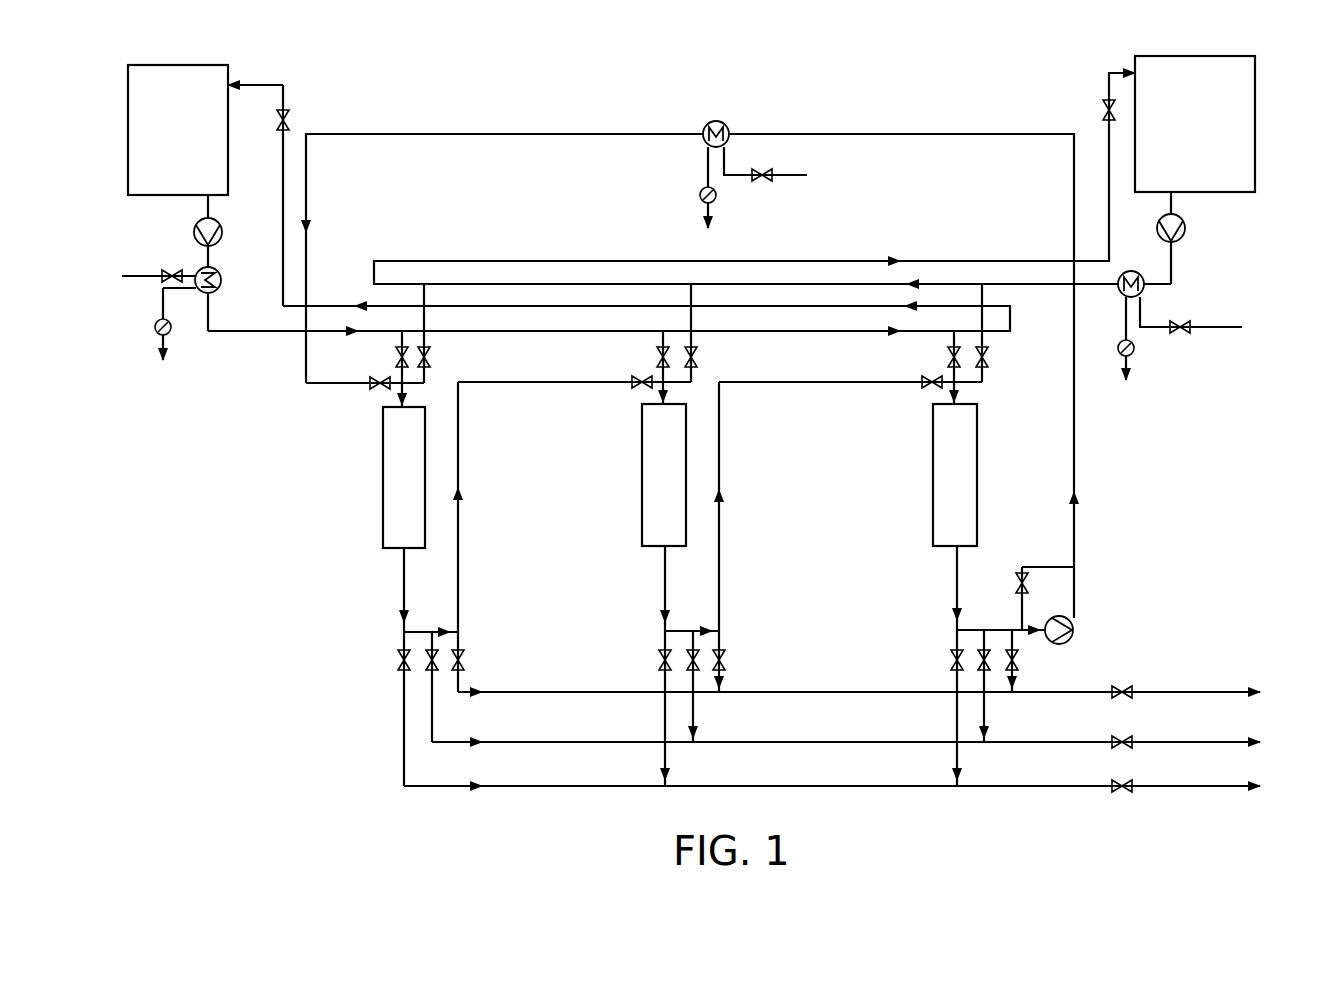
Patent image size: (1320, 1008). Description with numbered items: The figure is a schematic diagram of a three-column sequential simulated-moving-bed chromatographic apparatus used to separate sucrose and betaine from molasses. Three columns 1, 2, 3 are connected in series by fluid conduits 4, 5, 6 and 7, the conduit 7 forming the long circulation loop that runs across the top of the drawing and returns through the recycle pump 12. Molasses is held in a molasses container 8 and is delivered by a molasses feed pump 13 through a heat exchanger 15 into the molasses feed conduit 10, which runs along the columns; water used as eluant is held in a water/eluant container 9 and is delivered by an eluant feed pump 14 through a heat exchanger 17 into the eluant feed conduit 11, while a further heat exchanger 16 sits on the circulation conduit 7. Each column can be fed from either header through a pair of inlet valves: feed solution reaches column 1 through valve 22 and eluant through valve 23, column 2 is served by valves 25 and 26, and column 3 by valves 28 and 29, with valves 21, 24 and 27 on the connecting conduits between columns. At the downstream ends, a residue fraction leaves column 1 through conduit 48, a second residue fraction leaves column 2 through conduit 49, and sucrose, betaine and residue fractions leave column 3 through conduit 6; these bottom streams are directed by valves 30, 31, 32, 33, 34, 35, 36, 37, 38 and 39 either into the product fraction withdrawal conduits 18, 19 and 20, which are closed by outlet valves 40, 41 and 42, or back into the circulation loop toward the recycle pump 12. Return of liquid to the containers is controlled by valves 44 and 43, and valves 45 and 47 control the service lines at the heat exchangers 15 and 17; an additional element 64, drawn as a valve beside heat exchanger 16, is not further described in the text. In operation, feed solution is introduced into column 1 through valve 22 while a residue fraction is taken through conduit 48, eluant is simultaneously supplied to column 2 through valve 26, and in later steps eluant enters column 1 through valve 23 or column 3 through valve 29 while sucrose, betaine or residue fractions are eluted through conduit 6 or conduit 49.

The column 1 is at (383, 488).
The column 2 is at (642, 488).
The column 3 is at (933, 488).
The fluid conduit 4 is at (460, 560).
The fluid conduit 5 is at (721, 560).
The fluid conduit 6 is at (960, 565).
The fluid conduit 7 is at (425, 134).
The molasses container 8 is at (228, 170).
The water/eluant container 9 is at (1255, 192).
The molasses feed conduit 10 is at (215, 324).
The eluant feed conduit 11 is at (1182, 268).
The recycle pump 12 is at (1072, 635).
The molasses feed pump 13 is at (221, 226).
The eluant feed pump 14 is at (1185, 232).
The heat exchanger 15 is at (221, 277).
The heat exchanger 16 is at (727, 123).
The heat exchanger 17 is at (1138, 272).
The product fraction withdrawal conduit 18 is at (1066, 693).
The product fraction withdrawal conduit 19 is at (1066, 743).
The product fraction withdrawal conduit 20 is at (1066, 787).
The valve 21 is at (373, 391).
The valve 22 is at (396, 360).
The valve 23 is at (430, 363).
The valve 24 is at (637, 391).
The valve 25 is at (657, 360).
The valve 26 is at (697, 362).
The valve 27 is at (927, 391).
The valve 28 is at (948, 360).
The valve 29 is at (988, 362).
The valve 30 is at (398, 663).
The valve 31 is at (437, 670).
The valve 32 is at (464, 662).
The valve 33 is at (659, 663).
The valve 34 is at (687, 660).
The valve 35 is at (725, 662).
The valve 36 is at (951, 661).
The valve 37 is at (978, 660).
The valve 38 is at (1018, 661).
The valve 39 is at (1015, 586).
The valve 40 is at (1124, 699).
The valve 41 is at (1124, 749).
The valve 42 is at (1124, 793).
The valve 43 is at (1103, 108).
The valve 44 is at (290, 117).
The valve 45 is at (165, 284).
The valve 47 is at (1183, 334).
The product fraction withdrawal conduit 48 is at (403, 587).
The product fraction withdrawal conduit 49 is at (664, 585).
The valve 64 is at (765, 180).